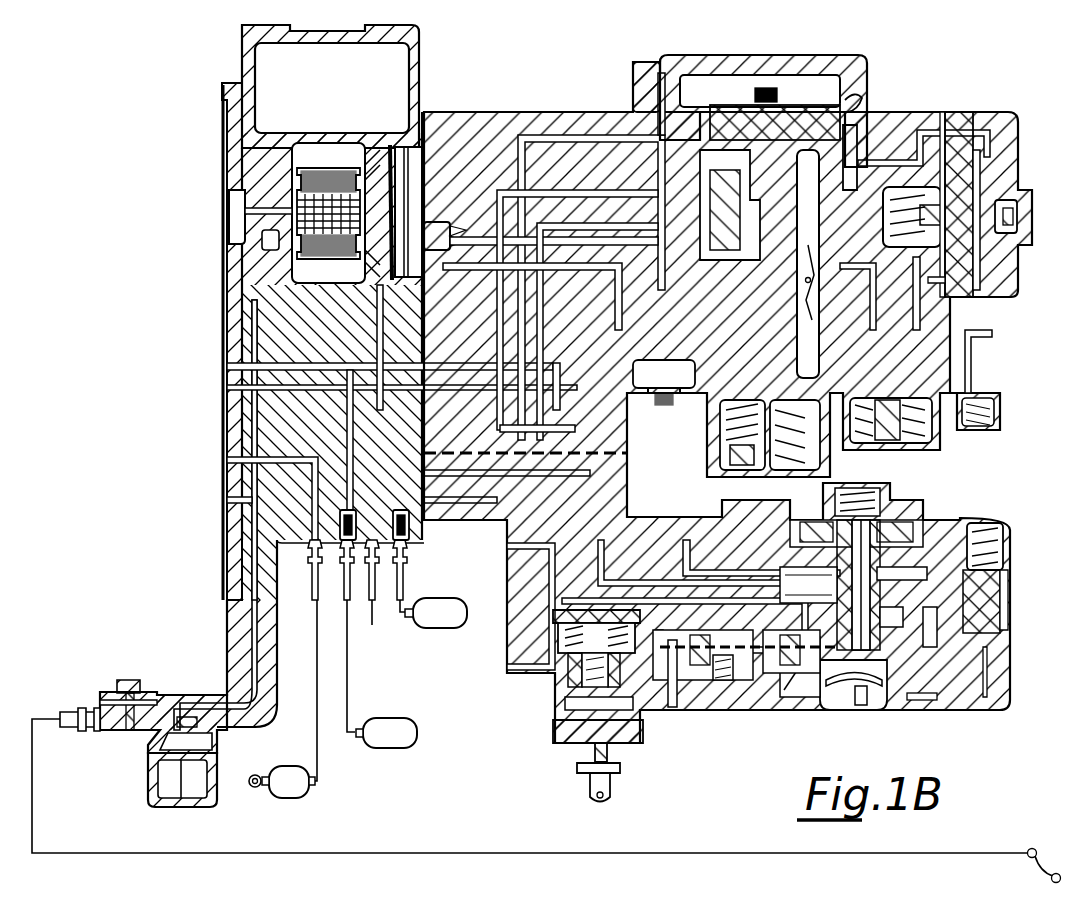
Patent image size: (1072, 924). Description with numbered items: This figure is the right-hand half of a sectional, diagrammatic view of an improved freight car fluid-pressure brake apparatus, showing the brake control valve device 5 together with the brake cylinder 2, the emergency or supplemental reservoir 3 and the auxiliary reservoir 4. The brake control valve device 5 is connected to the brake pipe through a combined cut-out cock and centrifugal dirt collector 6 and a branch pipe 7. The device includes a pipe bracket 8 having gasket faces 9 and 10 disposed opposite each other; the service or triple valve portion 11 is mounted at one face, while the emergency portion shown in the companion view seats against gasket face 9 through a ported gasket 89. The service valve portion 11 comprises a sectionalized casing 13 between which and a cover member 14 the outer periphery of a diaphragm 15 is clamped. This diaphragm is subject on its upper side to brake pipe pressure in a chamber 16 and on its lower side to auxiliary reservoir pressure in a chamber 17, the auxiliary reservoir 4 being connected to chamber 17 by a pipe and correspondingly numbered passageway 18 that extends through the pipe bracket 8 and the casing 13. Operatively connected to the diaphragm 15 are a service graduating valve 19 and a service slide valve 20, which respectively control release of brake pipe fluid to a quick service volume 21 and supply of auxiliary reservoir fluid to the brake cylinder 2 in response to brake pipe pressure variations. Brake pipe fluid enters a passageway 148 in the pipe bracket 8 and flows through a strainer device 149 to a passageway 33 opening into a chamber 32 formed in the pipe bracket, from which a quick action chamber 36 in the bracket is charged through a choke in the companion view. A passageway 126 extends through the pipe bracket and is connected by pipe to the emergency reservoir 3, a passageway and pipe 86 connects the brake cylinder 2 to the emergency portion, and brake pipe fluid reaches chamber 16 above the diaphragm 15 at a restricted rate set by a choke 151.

The brake cylinder 2 is at (287, 800).
The emergency reservoir 3 is at (390, 749).
The auxiliary reservoir 4 is at (434, 630).
The brake control valve device 5 is at (373, 366).
The combined cut-out cock and centrifugal dirt collector 6 is at (183, 694).
The branch pipe 7 is at (40, 800).
The pipe bracket 8 is at (334, 23).
The gasket face 9 is at (232, 90).
The gasket face 10 is at (424, 114).
The service valve portion 11 is at (920, 110).
The sectionalized casing 13 is at (478, 124).
The cover member 14 is at (646, 72).
The diaphragm 15 is at (850, 108).
The chamber 16 is at (812, 84).
The chamber 17 is at (865, 112).
The passageway 18 is at (403, 565).
The service graduating valve 19 is at (786, 213).
The service slide valve 20 is at (718, 392).
The quick service volume 21 is at (648, 382).
The chamber 32 is at (240, 190).
The passageway 33 is at (272, 212).
The quick action chamber 36 is at (392, 70).
The passageway and pipe 86 is at (310, 545).
The ported gasket 89 is at (226, 590).
The passageway 126 is at (352, 452).
The passageway 148 is at (257, 642).
The strainer device 149 is at (314, 176).
The choke 151 is at (448, 236).